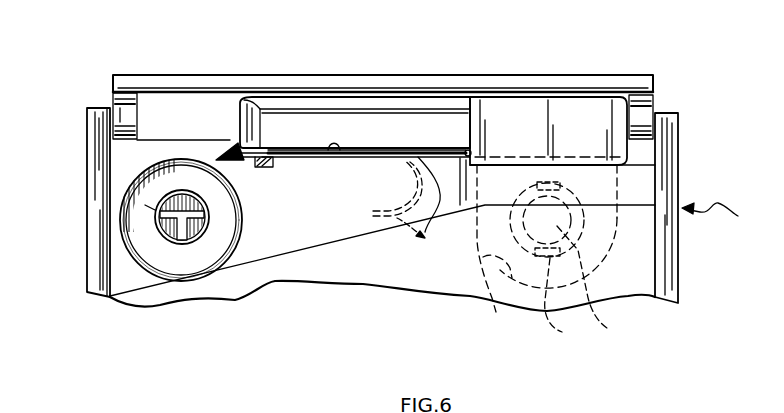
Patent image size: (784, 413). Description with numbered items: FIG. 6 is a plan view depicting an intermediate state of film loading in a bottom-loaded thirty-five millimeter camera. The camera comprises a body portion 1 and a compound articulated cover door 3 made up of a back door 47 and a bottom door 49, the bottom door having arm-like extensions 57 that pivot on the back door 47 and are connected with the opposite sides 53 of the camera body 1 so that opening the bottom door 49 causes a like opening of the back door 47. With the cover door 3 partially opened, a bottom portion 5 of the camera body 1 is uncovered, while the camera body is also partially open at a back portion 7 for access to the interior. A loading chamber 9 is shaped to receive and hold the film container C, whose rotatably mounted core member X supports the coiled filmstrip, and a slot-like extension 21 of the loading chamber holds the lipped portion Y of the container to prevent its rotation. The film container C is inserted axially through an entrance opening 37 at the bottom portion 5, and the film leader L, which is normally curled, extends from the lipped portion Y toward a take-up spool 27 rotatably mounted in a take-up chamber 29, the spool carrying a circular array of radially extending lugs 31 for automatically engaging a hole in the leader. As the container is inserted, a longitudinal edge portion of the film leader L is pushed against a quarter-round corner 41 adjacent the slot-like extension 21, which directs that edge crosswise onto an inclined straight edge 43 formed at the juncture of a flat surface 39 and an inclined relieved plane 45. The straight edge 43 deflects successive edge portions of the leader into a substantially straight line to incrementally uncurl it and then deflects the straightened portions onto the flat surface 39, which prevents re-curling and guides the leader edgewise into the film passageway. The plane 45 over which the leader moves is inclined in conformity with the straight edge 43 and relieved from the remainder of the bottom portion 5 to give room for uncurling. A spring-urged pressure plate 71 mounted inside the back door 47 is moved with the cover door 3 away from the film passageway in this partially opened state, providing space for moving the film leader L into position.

The body portion 1 is at (718, 215).
The cover door 3 is at (547, 76).
The bottom portion 5 is at (328, 259).
The back portion 7 is at (439, 155).
The loading chamber 9 is at (140, 226).
The slot-like extension 21 is at (250, 170).
The take-up spool 27 is at (607, 326).
The take-up chamber 29 is at (494, 306).
The radially extending lugs 31 is at (562, 331).
The entrance opening 37 is at (192, 266).
The flat surface 39 is at (339, 159).
The quarter-round corner 41 is at (264, 155).
The inclined straight edge 43 is at (354, 158).
The inclined relieved plane 45 is at (343, 218).
The back door 47 is at (370, 100).
The bottom door 49 is at (447, 86).
The opposite sides 53 is at (90, 167).
The arm-like extensions 57 is at (120, 103).
The pressure plate 71 is at (404, 126).
The film container C is at (122, 208).
The film leader L is at (408, 203).
The core member X is at (160, 230).
The lipped portion Y is at (234, 148).